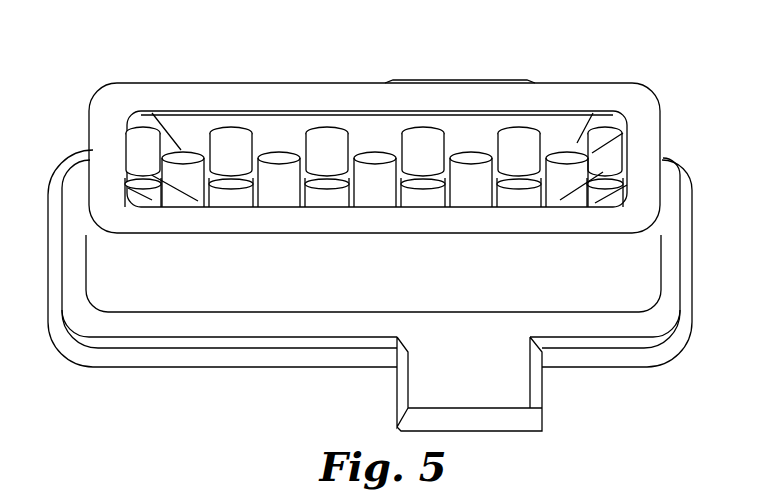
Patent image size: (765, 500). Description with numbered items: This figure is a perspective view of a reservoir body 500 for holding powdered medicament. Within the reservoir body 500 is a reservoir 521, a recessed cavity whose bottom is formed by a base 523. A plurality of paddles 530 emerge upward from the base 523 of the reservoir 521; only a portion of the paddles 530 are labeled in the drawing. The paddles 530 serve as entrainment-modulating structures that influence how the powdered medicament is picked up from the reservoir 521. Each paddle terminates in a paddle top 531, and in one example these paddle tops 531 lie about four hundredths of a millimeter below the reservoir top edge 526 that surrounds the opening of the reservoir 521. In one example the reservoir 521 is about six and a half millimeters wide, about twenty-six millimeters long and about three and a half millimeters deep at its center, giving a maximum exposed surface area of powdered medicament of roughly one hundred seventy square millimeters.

The reservoir body 500 is at (625, 62).
The reservoir 521 is at (486, 125).
The base 523 is at (575, 146).
The reservoir top edge 526 is at (130, 99).
The paddles 530 is at (313, 143).
The paddle tops 531 is at (470, 153).